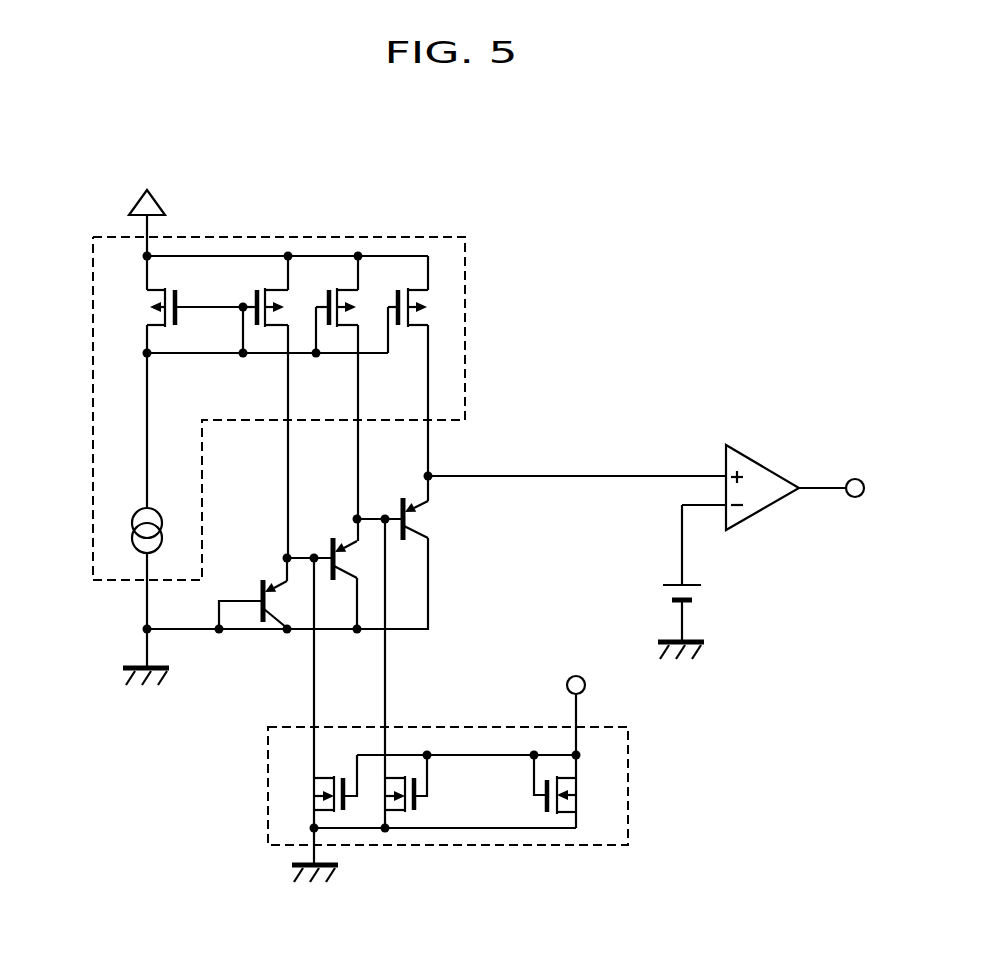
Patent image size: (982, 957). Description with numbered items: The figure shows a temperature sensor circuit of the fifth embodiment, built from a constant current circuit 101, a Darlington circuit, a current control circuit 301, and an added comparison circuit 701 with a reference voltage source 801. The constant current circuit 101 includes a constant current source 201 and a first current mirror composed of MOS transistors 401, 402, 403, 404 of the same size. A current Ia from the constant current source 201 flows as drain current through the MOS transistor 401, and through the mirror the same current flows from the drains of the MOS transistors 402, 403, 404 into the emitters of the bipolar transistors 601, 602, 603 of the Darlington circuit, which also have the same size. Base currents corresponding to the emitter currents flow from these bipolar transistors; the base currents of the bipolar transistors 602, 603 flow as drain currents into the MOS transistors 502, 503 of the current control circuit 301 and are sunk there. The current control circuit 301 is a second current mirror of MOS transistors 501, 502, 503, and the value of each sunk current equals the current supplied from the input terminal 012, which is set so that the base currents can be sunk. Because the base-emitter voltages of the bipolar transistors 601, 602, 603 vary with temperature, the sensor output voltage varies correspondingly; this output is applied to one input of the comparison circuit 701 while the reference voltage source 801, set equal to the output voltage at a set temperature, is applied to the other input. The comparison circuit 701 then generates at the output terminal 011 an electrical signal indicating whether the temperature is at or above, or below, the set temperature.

The constant current circuit 101 is at (465, 332).
The constant current source 201 is at (140, 513).
The current control circuit 301 is at (607, 847).
The MOS transistor 401 is at (138, 314).
The MOS transistor 402 is at (273, 288).
The MOS transistor 403 is at (343, 288).
The MOS transistor 404 is at (434, 308).
The MOS transistor 501 is at (553, 817).
The MOS transistor 502 is at (310, 798).
The MOS transistor 503 is at (407, 815).
The bipolar transistor 601 is at (273, 618).
The bipolar transistor 602 is at (342, 578).
The bipolar transistor 603 is at (430, 520).
The comparison circuit 701 is at (753, 457).
The reference voltage source 801 is at (703, 590).
The output terminal 011 is at (855, 497).
The input terminal 012 is at (576, 673).